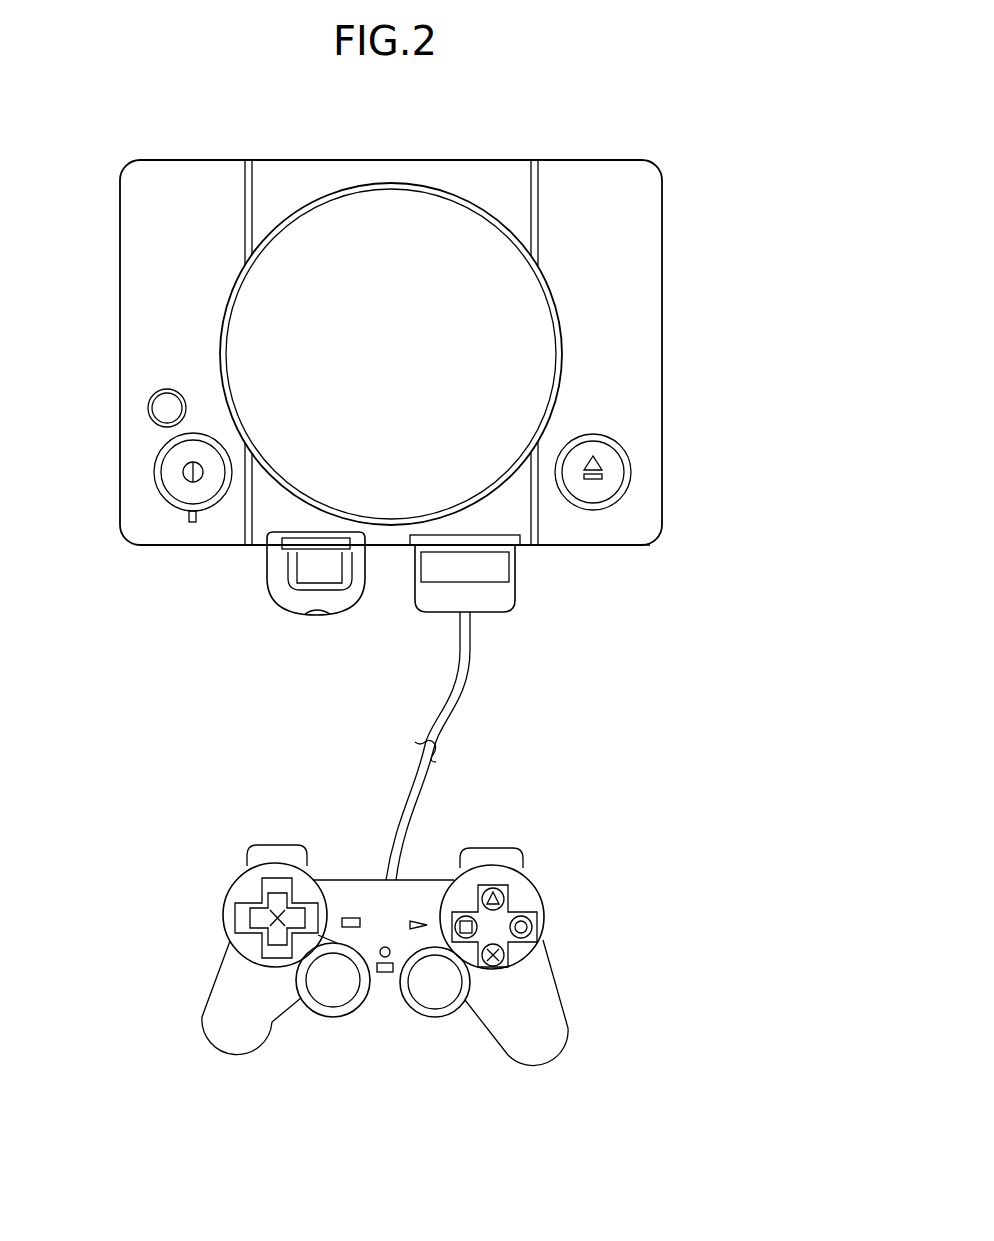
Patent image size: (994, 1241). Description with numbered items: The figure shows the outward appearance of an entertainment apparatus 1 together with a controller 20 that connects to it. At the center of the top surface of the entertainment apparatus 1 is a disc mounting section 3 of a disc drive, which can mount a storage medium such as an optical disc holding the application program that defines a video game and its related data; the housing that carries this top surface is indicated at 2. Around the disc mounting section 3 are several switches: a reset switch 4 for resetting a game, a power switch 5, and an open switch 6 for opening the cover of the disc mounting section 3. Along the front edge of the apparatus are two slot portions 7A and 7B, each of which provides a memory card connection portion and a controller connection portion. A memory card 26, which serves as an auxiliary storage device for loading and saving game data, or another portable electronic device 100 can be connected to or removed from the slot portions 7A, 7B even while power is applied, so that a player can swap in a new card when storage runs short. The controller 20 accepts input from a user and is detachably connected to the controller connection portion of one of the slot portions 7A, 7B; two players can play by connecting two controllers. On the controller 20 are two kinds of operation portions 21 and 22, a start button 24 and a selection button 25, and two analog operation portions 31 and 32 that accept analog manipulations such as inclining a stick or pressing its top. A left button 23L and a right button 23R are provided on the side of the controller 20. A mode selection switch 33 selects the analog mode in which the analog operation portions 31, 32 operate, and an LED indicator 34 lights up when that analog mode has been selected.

The entertainment apparatus 1 is at (580, 148).
The housing 2 is at (630, 547).
The disc mounting section 3 is at (430, 205).
The reset switch 4 is at (162, 405).
The power switch 5 is at (167, 468).
The open switch 6 is at (620, 472).
The slot portion 7A is at (268, 548).
The slot portion 7B is at (517, 548).
The portable electronic device 100 is at (254, 616).
The controller 20 is at (606, 996).
The operation portion 21 is at (226, 868).
The operation portion 22 is at (545, 877).
The left button 23L is at (260, 824).
The right button 23R is at (546, 844).
The start button 24 is at (413, 918).
The selection button 25 is at (350, 914).
The memory card 26 is at (505, 613).
The analog operation portion 31 is at (326, 986).
The analog operation portion 32 is at (443, 996).
The mode selection switch 33 is at (382, 957).
The LED indicator 34 is at (386, 974).